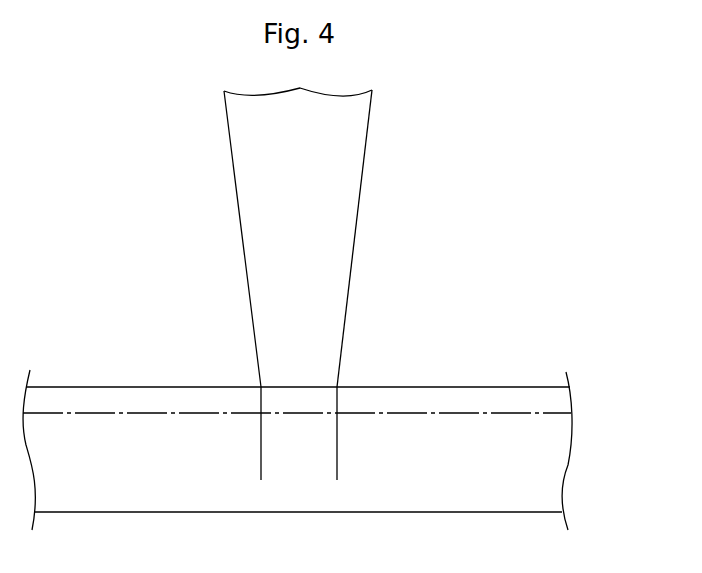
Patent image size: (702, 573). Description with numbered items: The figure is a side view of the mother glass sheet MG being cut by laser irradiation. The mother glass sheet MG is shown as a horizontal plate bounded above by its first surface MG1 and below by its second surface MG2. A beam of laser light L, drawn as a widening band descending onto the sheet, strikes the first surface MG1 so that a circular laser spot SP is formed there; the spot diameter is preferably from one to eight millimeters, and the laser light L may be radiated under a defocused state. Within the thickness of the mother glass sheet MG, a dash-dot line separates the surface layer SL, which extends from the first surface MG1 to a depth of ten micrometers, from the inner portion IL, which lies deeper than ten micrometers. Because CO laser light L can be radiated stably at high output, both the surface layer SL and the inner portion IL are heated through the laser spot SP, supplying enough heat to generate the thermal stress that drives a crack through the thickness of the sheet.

The laser light L is at (363, 177).
The mother glass sheet MG is at (484, 382).
The first surface MG1 is at (172, 387).
The second surface MG2 is at (177, 512).
The surface layer SL is at (557, 398).
The inner portion IL is at (533, 455).
The laser spot SP is at (337, 469).